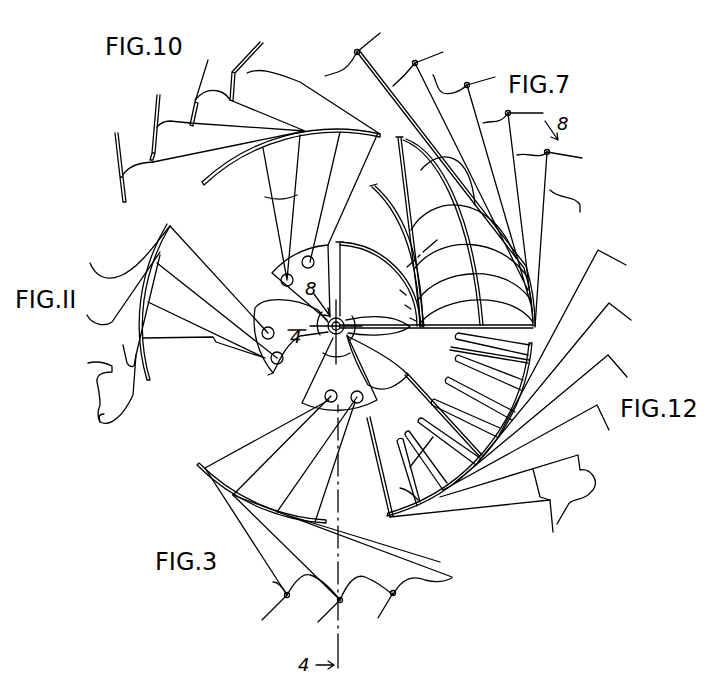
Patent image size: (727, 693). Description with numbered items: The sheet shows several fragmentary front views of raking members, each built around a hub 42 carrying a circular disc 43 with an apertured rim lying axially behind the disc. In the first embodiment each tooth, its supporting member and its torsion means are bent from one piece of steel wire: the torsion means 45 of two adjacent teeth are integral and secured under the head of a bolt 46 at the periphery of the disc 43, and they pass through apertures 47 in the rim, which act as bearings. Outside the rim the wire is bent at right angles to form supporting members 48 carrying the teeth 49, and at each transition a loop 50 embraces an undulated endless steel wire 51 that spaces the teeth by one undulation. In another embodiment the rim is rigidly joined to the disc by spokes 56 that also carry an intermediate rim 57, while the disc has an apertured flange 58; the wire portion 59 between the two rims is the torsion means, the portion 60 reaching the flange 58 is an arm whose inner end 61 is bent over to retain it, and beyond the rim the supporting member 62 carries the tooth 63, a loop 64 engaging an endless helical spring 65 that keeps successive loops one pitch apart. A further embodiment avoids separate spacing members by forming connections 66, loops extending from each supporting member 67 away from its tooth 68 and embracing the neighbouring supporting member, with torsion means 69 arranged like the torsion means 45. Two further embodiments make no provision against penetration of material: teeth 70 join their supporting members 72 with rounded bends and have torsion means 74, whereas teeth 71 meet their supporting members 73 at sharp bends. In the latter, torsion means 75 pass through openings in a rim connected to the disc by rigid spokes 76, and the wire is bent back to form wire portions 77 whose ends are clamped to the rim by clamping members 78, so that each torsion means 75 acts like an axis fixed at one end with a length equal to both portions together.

In FIG. 3, the hub 42 is at (400, 350).
In FIG. 3, the circular disc 43 is at (270, 377).
In FIG. 3, the torsion means 45 is at (278, 448).
In FIG. 3, the bolt 46 is at (352, 394).
In FIG. 3, the apertures 47 is at (204, 472).
In FIG. 3, the supporting members 48 is at (239, 528).
In FIG. 3, the teeth 49 is at (324, 619).
In FIG. 3, the loop 50 is at (340, 605).
In FIG. 3, the undulated endless steel wire 51 is at (362, 591).
In FIG. 7, the spokes 56 is at (398, 174).
In FIG. 7, the intermediate rim 57 is at (390, 196).
In FIG. 7, the flange 58 is at (374, 257).
In FIG. 7, the torsion means portion 59 is at (419, 180).
In FIG. 7, the arm portion 60 is at (396, 250).
In FIG. 7, the inner end 61 is at (400, 290).
In FIG. 7, the supporting member 62 is at (405, 118).
In FIG. 7, the tooth 63 is at (362, 54).
In FIG. 7, the loop 64 is at (370, 76).
In FIG. 7, the endless helical spring 65 is at (488, 109).
In FIG. 10, the connections 66 is at (123, 183).
In FIG. 10, the supporting members 67 is at (215, 126).
In FIG. 10, the teeth 68 is at (114, 152).
In FIG. 10, the torsion means 69 is at (272, 197).
In FIG. 11, the teeth 70 is at (103, 408).
In FIG. 11, the supporting members 72 is at (127, 348).
In FIG. 11, the torsion means 74 is at (214, 348).
In FIG. 12, the teeth 71 is at (580, 489).
In FIG. 12, the supporting members 73 is at (504, 505).
In FIG. 12, the torsion means 75 is at (417, 435).
In FIG. 12, the spokes 76 is at (368, 445).
In FIG. 12, the wire portions 77 is at (431, 449).
In FIG. 12, the clamping members 78 is at (400, 488).